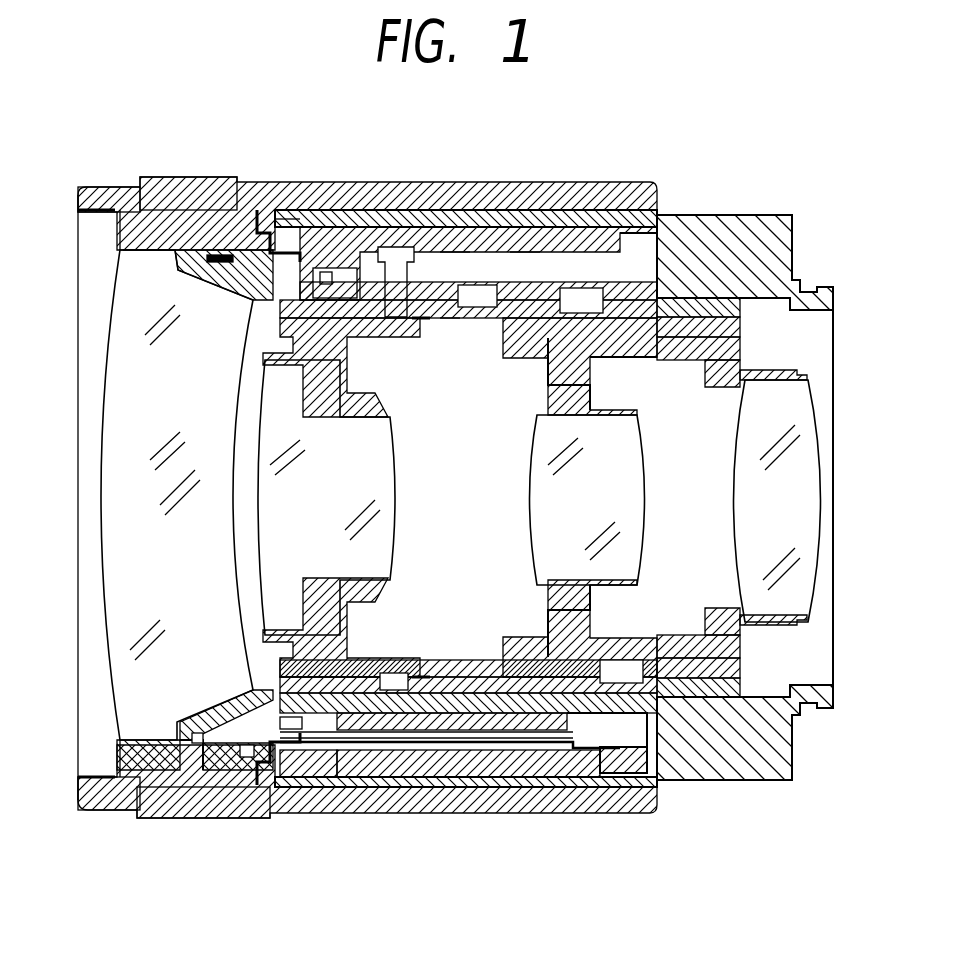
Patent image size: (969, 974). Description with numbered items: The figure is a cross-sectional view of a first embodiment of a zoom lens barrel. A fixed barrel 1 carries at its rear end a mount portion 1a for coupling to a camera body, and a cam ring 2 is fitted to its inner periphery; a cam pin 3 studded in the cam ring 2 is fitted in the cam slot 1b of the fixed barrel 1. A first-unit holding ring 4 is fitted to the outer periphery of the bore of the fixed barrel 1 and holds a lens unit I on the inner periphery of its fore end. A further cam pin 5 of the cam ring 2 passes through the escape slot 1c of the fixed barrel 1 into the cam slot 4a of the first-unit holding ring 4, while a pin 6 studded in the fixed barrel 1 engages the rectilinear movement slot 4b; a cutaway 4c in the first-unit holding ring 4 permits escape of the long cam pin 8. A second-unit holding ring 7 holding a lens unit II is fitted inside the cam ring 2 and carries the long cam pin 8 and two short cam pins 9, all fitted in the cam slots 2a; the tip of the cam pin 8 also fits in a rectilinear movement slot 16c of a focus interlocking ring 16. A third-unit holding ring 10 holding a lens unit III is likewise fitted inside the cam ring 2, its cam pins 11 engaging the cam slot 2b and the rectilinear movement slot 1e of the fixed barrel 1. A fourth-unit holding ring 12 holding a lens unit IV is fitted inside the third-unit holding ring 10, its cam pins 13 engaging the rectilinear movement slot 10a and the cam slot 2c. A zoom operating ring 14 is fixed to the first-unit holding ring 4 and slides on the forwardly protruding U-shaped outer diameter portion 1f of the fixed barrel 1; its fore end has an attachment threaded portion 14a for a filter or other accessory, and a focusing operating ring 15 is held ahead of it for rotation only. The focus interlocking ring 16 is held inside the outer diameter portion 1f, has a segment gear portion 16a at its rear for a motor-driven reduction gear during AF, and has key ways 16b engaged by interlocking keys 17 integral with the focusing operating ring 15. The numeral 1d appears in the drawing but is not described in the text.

The fixed barrel 1 is at (800, 230).
The mount portion 1a is at (828, 290).
The cam slot 1b is at (525, 300).
The escape slot 1c is at (217, 255).
The guide groove of fixed barrel 1d is at (455, 300).
The rectilinear movement slot 1e is at (690, 322).
The outer diameter portion 1f is at (374, 250).
The cam ring 2 is at (760, 300).
The cam slots 2a is at (420, 320).
The cam slot 2b is at (620, 355).
The cam slot 2c is at (690, 786).
The cam pin 3 is at (487, 286).
The first-unit holding ring 4 is at (220, 262).
The cam slot 4a is at (328, 270).
The rectilinear movement slot 4b is at (283, 762).
The cutaway 4c is at (450, 320).
The cam pin 5 is at (340, 278).
The pin 6 is at (312, 765).
The second-unit holding ring 7 is at (365, 340).
The cam pin 8 is at (433, 290).
The cam pins 9 is at (387, 785).
The third-unit holding ring 10 is at (725, 332).
The rectilinear movement slot 10a is at (640, 665).
The cam pins 11 is at (600, 290).
The fourth-unit holding ring 12 is at (765, 760).
The cam pins 13 is at (625, 737).
The zoom operating ring 14 is at (405, 195).
The attachment threaded portion 14a is at (97, 190).
The focusing operating ring 15 is at (170, 185).
The focus interlocking ring 16 is at (564, 228).
The segment gear portion 16a is at (578, 742).
The key ways 16b is at (520, 742).
The rectilinear movement slot 16c is at (356, 250).
The interlocking keys 17 is at (478, 760).
The lens unit I is at (130, 348).
The lens unit II is at (370, 462).
The lens unit III is at (622, 462).
The lens unit IV is at (812, 462).